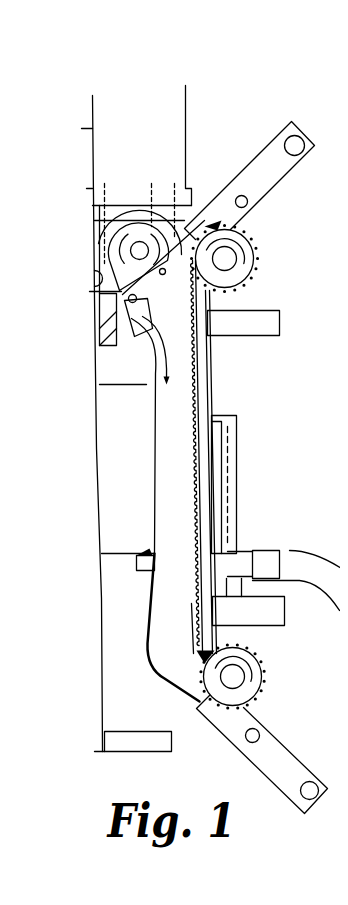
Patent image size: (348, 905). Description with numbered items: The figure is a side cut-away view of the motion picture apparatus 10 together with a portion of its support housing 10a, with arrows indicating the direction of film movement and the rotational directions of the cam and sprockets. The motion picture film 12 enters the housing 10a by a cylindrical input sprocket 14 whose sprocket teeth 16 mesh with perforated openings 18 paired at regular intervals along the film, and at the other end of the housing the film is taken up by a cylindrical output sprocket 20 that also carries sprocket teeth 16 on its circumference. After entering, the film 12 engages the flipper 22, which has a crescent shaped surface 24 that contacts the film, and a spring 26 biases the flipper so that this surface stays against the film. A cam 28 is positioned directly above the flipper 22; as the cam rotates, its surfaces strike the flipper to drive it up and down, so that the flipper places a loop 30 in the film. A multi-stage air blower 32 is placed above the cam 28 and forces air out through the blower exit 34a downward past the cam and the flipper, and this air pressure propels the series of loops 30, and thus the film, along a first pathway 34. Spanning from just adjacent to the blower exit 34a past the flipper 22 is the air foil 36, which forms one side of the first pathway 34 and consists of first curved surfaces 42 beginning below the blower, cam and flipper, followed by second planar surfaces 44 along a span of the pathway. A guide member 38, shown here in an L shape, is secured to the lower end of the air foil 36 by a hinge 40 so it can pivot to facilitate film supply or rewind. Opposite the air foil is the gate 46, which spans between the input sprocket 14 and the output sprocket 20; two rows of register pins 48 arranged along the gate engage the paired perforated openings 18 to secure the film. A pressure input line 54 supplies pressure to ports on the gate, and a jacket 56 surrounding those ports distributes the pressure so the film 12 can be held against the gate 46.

The motion picture apparatus 10 is at (279, 106).
The support housing 10a is at (97, 480).
The motion picture film 12 is at (347, 225).
The input sprocket 14 is at (238, 270).
The sprocket teeth 16 is at (254, 246).
The perforated openings 18 is at (217, 222).
The output sprocket 20 is at (252, 688).
The flipper 22 is at (155, 340).
The crescent shaped surface 24 is at (143, 313).
The spring 26 is at (118, 322).
The cam 28 is at (112, 246).
The loop 30 is at (160, 273).
The multi-stage air blower 32 is at (187, 108).
The first pathway 34 is at (191, 454).
The blower exit 34a is at (160, 132).
The air foil 36 is at (155, 412).
The guide member 38 is at (147, 640).
The hinge 40 is at (145, 547).
The first curved surfaces 42 is at (97, 272).
The second planar surfaces 44 is at (157, 512).
The gate 46 is at (210, 347).
The register pins 48 is at (197, 560).
The pressure input line 54 is at (300, 552).
The jacket 56 is at (238, 453).